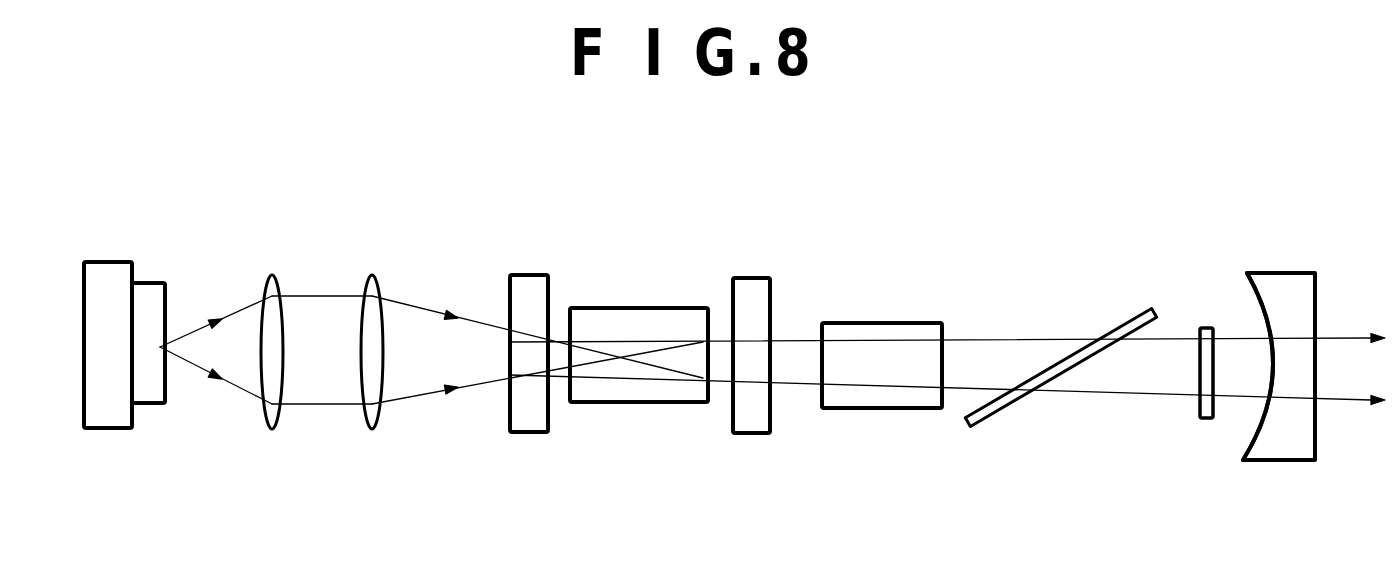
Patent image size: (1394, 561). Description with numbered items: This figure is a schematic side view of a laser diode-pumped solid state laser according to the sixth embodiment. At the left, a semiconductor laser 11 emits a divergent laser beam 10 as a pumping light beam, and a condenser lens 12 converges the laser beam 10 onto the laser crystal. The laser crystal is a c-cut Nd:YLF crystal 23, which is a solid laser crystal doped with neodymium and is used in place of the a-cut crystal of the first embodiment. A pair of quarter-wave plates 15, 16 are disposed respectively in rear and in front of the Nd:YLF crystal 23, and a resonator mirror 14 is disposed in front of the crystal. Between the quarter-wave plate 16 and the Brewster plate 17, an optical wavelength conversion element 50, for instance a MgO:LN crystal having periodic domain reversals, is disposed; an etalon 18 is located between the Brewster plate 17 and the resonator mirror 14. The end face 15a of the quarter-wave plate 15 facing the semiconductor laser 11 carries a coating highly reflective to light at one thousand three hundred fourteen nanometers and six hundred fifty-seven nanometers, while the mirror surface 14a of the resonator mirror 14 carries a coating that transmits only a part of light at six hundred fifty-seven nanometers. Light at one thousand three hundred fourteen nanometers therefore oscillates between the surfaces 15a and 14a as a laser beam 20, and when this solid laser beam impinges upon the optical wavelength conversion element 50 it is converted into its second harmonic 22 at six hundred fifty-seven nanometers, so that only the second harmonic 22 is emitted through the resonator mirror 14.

The semiconductor laser 11 is at (112, 275).
The laser beam 10 is at (235, 307).
The condenser lens 12 is at (262, 447).
The λ/4 plate 15 is at (533, 268).
The end face 15a is at (510, 410).
The c-cut Nd:YLF crystal 23 is at (652, 308).
The λ/4 plate 16 is at (757, 278).
The optical wavelength conversion element 50 is at (908, 323).
The Brewster plate 17 is at (1118, 328).
The etalon 18 is at (1208, 327).
The resonator mirror 14 is at (1279, 266).
The mirror surface 14a is at (1250, 440).
The second harmonic 22 is at (1338, 337).
The laser beam 20 is at (1072, 392).